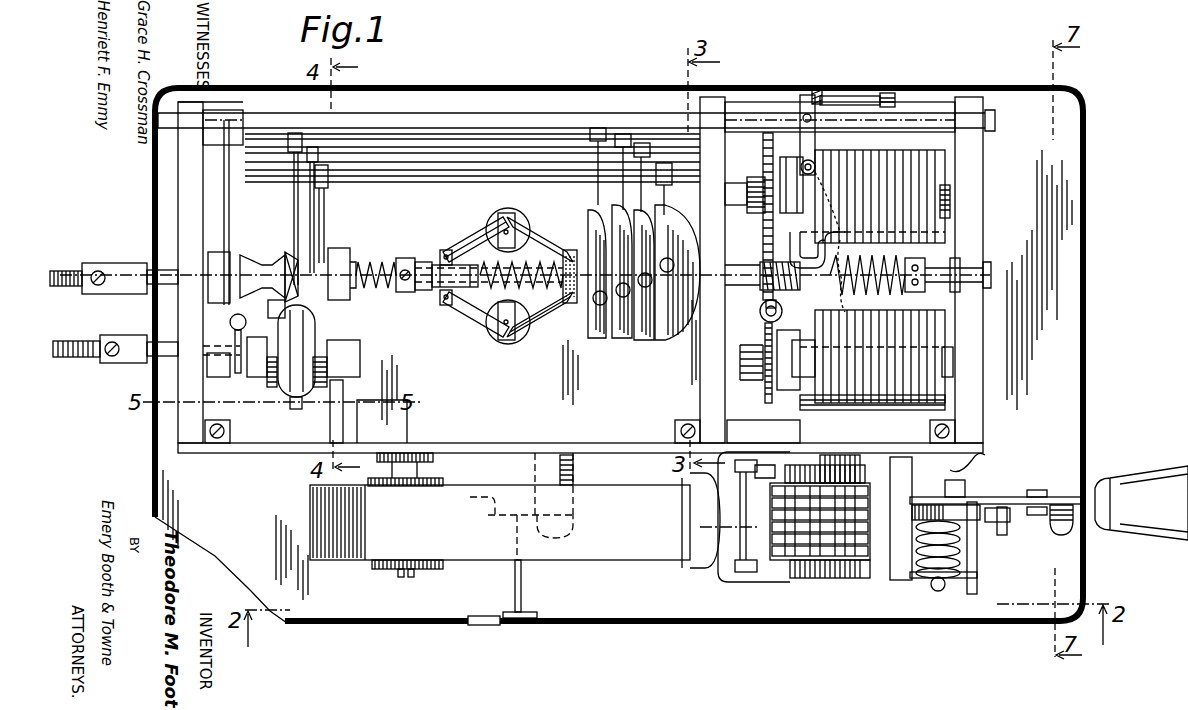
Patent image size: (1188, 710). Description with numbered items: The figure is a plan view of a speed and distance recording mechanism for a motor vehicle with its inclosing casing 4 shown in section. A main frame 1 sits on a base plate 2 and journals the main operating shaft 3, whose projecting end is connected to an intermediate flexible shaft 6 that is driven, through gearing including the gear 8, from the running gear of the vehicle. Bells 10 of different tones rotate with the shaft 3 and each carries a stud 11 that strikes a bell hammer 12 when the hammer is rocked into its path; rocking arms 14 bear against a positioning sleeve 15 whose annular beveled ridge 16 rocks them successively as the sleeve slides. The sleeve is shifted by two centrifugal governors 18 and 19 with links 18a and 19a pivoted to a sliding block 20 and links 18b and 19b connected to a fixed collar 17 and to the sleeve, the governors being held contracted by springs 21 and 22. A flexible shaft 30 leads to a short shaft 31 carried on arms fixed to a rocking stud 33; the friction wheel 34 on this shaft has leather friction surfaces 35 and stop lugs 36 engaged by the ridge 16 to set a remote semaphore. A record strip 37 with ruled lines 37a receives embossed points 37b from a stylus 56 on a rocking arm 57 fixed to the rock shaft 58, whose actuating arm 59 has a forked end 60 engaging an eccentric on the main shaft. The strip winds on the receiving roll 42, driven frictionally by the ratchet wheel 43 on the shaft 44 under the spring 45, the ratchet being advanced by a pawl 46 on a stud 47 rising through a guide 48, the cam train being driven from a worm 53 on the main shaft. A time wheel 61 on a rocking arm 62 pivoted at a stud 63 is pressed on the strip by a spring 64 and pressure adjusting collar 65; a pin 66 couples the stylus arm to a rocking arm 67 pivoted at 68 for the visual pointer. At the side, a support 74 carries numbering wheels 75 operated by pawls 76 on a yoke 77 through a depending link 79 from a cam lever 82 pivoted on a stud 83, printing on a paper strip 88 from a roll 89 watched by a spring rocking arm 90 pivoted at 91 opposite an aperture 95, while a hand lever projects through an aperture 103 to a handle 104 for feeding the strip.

The main frame 1 is at (183, 210).
The base plate 2 is at (1057, 363).
The main operating shaft 3 is at (558, 287).
The casing 4 is at (1084, 257).
The intermediate flexible shaft 6 is at (86, 270).
The gear 8 is at (700, 527).
The bells or chimes 10 is at (689, 330).
The stud or projection 11 is at (621, 289).
The bell hammers 12 is at (612, 200).
The rocking arm 14 is at (323, 222).
The governor controlled positioning sleeve 15 is at (497, 157).
The annular beveled ridge 16 is at (279, 255).
The collar 17 is at (572, 303).
The centrifugal governor 18 is at (512, 222).
The link 18a is at (463, 304).
The link 18b is at (540, 312).
The centrifugal governor 19 is at (404, 258).
The link 19a is at (424, 292).
The link 19b is at (352, 285).
The block 20 is at (452, 273).
The spring 21 is at (525, 262).
The spring 22 is at (375, 262).
The flexible shaft 30 is at (104, 342).
The short shaft 31 is at (220, 378).
The rocking stud 33 is at (250, 380).
The semaphore operating friction wheel 34 is at (232, 328).
The annular friction surfaces 35 is at (318, 335).
The stop lugs 36 is at (268, 302).
The record strip 37 is at (918, 234).
The longitudinally ruled lines 37a is at (897, 185).
The embossed points 37b is at (850, 316).
The receiving and actuating roll 42 is at (805, 397).
The actuating ratchet wheel 43 is at (766, 339).
The shaft 44 is at (947, 350).
The spring 45 is at (752, 380).
The pawl 46 is at (760, 317).
The stud 47 is at (764, 306).
The guide 48 is at (845, 312).
The worm 53 is at (792, 290).
The stylus 56 is at (818, 168).
The rocking arm 57 is at (817, 142).
The rock shaft 58 is at (528, 116).
The actuating arm 59 is at (229, 212).
The forked end 60 is at (231, 254).
The time indicating wheel 61 is at (796, 180).
The rocking arm 62 is at (775, 244).
The stud or short shaft 63 is at (910, 291).
The spring 64 is at (830, 248).
The pressure adjusting collar 65 is at (925, 296).
The pin 66 is at (818, 91).
The rocking arm 67 is at (845, 97).
The pivot 68 is at (882, 100).
The support 74 is at (733, 579).
The numbering disks or wheels 75 is at (812, 547).
The pawls 76 is at (888, 583).
The yoke 77 is at (838, 470).
The depending link 79 is at (760, 470).
The cam lever 82 is at (975, 468).
The stud 83 is at (952, 488).
The strip of paper 88 is at (572, 548).
The roll 89 is at (385, 570).
The spring rocking arm 90 is at (497, 514).
The pivot 91 is at (515, 578).
The aperture 95 is at (488, 626).
The aperture 103 is at (1080, 498).
The handle 104 is at (1157, 466).